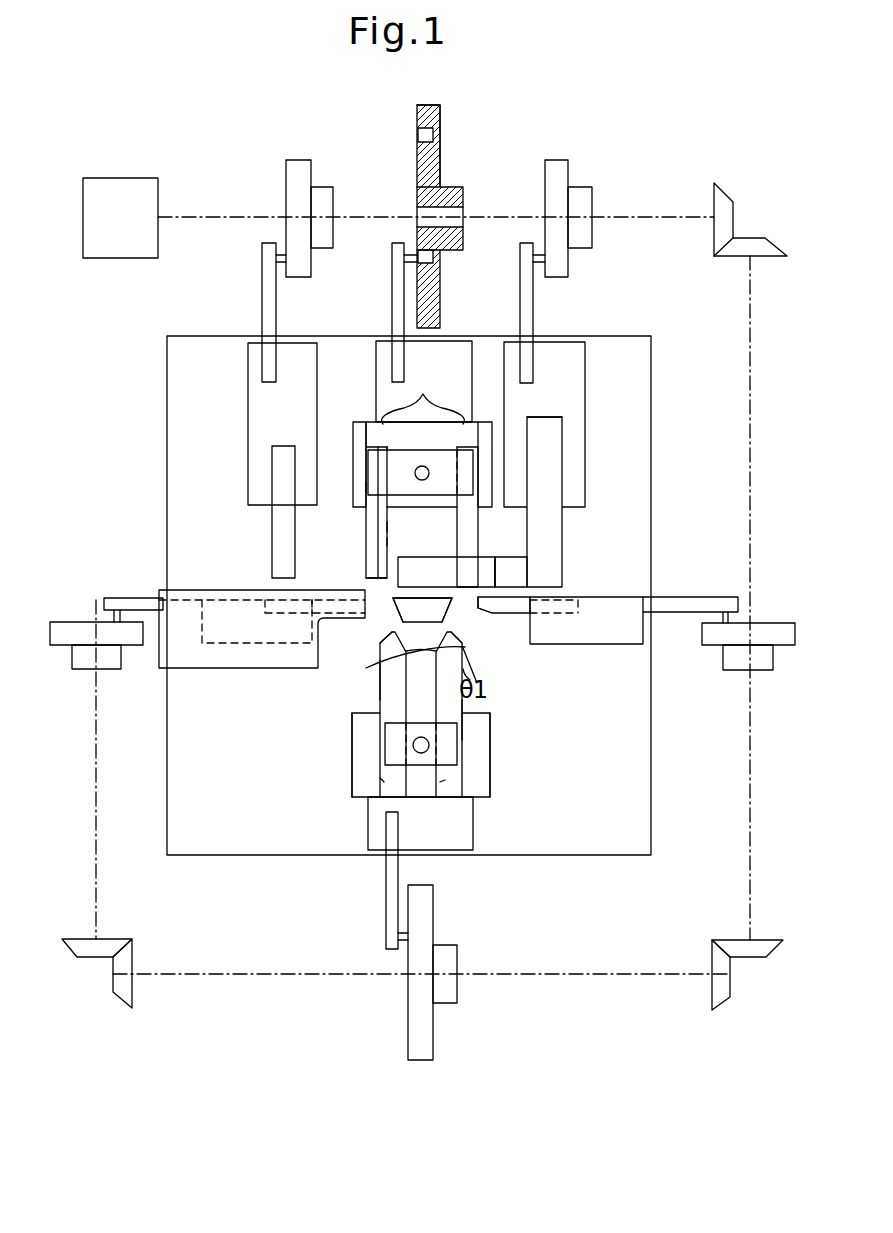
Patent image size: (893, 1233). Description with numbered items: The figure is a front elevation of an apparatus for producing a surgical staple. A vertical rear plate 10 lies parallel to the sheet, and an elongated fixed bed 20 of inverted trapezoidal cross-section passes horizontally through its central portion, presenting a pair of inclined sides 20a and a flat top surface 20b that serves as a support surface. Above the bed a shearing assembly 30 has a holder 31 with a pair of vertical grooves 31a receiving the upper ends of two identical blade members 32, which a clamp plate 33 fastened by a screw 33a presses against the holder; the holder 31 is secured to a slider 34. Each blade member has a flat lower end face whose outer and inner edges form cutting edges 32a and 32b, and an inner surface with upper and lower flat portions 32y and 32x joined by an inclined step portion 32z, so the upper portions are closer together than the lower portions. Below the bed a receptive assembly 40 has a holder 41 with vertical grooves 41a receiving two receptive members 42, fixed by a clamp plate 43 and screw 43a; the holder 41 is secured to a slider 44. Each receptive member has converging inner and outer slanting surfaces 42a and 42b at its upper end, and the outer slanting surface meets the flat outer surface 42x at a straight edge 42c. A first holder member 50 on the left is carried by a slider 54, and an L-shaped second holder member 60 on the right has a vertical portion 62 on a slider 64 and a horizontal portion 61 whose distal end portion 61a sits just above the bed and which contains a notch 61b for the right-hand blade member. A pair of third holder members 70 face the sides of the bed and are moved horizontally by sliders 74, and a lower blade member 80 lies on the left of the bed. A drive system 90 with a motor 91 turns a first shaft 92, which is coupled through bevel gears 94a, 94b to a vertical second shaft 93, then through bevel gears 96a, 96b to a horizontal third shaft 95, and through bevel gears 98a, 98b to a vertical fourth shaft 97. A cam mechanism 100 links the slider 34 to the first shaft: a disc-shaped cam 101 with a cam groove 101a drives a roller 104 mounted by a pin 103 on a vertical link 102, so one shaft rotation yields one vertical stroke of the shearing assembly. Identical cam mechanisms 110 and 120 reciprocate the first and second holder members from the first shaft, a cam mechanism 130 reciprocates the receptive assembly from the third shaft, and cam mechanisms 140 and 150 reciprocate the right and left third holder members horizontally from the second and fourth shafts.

The rear plate 10 is at (615, 336).
The fixed bed 20 is at (447, 622).
The inclined side surface 20a is at (394, 614).
The top surface 20b is at (393, 605).
The shearing assembly 30 is at (483, 342).
The holder 31 is at (360, 422).
The vertical groove 31a is at (425, 398).
The blade member 32 is at (362, 513).
The outer cutting edge 32a is at (388, 578).
The inner cutting edge 32b is at (457, 566).
The lower flat vertical portion 32x is at (388, 548).
The upper flat vertical portion 32y is at (365, 488).
The inclined step portion 32z is at (388, 534).
The clamp plate 33 is at (419, 474).
The screw 33a is at (392, 448).
The slider 34 is at (378, 350).
The receptive assembly 40 is at (494, 748).
The holder 41 is at (357, 738).
The vertical groove 41a is at (441, 783).
The receptive member 42 is at (377, 725).
The inner slanting surface 42a is at (420, 650).
The outer slanting surface 42b is at (379, 645).
The edge 42c is at (366, 668).
The outer surface 42x is at (380, 688).
The clamp plate 43 is at (392, 746).
The screw 43a is at (430, 749).
The slider 44 is at (474, 821).
The first holder member 50 is at (273, 456).
The slider 54 is at (250, 397).
The second holder member 60 is at (565, 468).
The horizontal portion 61 is at (507, 557).
The distal end portion 61a is at (513, 603).
The notch 61b is at (495, 573).
The vertical portion 62 is at (563, 436).
The slider 64 is at (586, 376).
The third holder member 70 is at (333, 607).
The slider 74 is at (202, 648).
The lower blade member 80 is at (236, 668).
The drive system 90 is at (100, 172).
The motor 91 is at (125, 178).
The first shaft 92 is at (204, 215).
The second shaft 93 is at (752, 386).
The bevel gear 94a is at (727, 192).
The bevel gear 94b is at (759, 238).
The third shaft 95 is at (568, 972).
The bevel gear 96a is at (760, 940).
The bevel gear 96b is at (720, 1002).
The fourth shaft 97 is at (96, 800).
The bevel gear 98a is at (133, 986).
The bevel gear 98b is at (70, 957).
The cam mechanism 100 is at (449, 158).
The cam 101 is at (440, 105).
The cam groove 101a is at (418, 135).
The link 102 is at (404, 258).
The pin 103 is at (415, 250).
The roller 104 is at (434, 256).
The cam mechanism 110 is at (296, 160).
The cam mechanism 120 is at (556, 160).
The cam mechanism 130 is at (444, 1022).
The cam mechanism 140 is at (762, 673).
The cam mechanism 150 is at (88, 673).